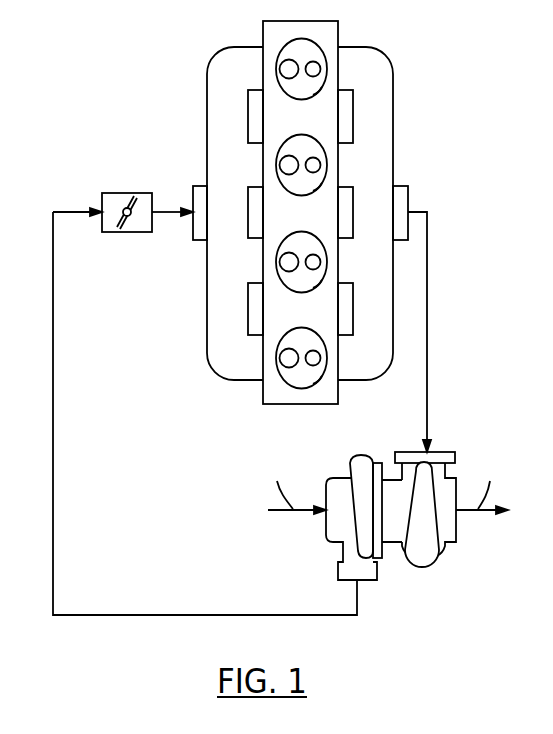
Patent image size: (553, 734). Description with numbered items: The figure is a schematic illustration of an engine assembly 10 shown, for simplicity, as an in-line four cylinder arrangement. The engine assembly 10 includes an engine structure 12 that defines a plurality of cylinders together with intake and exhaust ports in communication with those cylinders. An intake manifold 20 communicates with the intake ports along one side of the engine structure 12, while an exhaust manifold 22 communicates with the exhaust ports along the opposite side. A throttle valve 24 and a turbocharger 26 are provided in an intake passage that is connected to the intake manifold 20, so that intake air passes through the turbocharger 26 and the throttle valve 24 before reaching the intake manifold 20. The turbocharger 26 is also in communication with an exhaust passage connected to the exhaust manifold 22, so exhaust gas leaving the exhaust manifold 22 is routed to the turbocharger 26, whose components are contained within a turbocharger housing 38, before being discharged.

The engine assembly 10 is at (100, 121).
The engine structure 12 is at (338, 41).
The intake manifold 20 is at (207, 85).
The exhaust manifold 22 is at (393, 85).
The throttle valve 24 is at (135, 232).
The turbocharger 26 is at (401, 542).
The turbocharger housing 38 is at (420, 573).